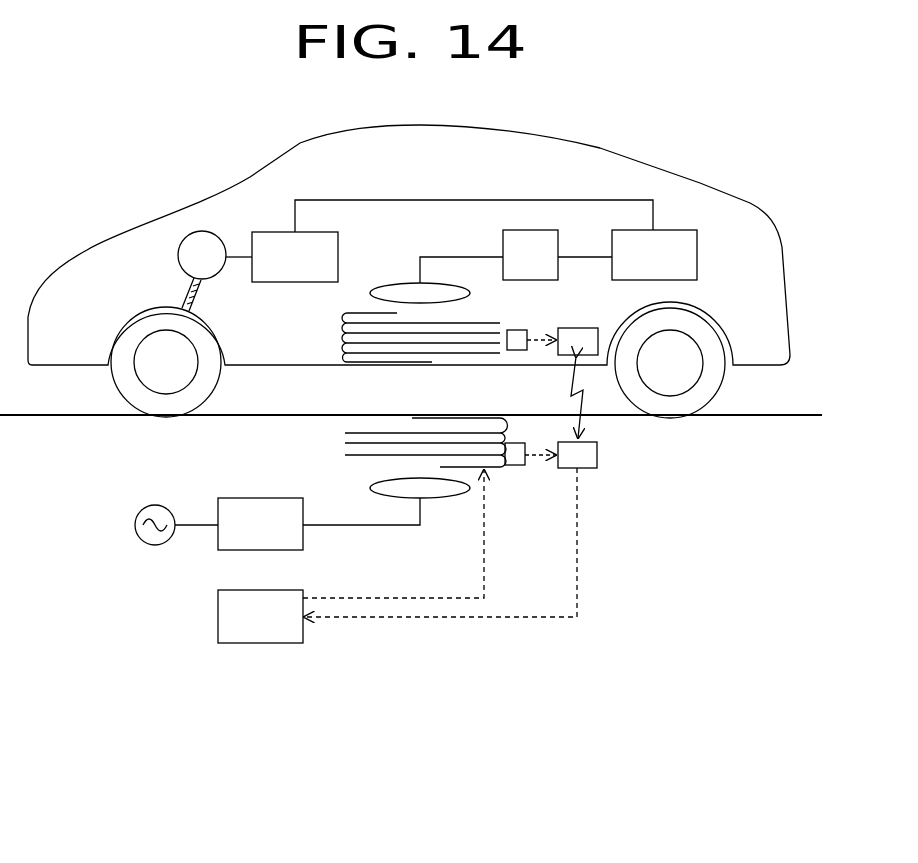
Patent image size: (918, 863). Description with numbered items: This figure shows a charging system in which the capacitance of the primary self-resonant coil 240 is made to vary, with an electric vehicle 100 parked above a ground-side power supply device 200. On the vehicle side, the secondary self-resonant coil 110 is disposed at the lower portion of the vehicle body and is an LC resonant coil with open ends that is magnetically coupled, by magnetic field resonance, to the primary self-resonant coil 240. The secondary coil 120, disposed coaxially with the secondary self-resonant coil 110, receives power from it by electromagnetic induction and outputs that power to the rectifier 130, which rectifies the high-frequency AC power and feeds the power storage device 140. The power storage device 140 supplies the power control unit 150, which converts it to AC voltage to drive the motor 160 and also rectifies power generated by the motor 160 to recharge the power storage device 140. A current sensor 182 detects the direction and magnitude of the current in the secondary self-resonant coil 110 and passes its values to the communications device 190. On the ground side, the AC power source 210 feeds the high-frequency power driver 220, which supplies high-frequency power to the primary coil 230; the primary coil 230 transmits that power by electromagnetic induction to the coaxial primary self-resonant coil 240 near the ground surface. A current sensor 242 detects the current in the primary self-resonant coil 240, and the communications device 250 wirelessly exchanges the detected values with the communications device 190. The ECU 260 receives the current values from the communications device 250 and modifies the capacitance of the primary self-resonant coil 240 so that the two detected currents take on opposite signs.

The electric vehicle 100 is at (496, 126).
The secondary self-resonant coil 110 is at (342, 331).
The secondary coil 120 is at (395, 283).
The rectifier 130 is at (503, 240).
The power storage device 140 is at (700, 257).
The power control unit 150 is at (263, 231).
The motor 160 is at (178, 257).
The current sensor 182 is at (516, 329).
The communications device 190 is at (576, 328).
The power supply device 200 is at (400, 653).
The AC power source 210 is at (156, 505).
The high-frequency power driver 220 is at (263, 498).
The primary coil 230 is at (445, 498).
The primary self-resonant coil 240 is at (342, 443).
The current sensor 242 is at (517, 468).
The communications device 250 is at (600, 455).
The ECU 260 is at (218, 617).